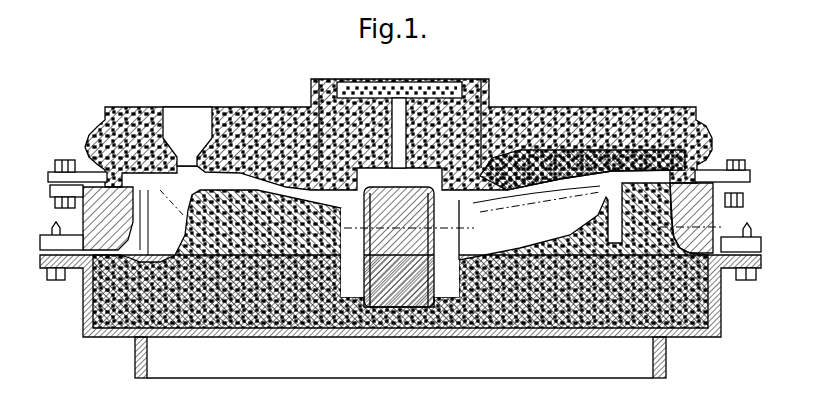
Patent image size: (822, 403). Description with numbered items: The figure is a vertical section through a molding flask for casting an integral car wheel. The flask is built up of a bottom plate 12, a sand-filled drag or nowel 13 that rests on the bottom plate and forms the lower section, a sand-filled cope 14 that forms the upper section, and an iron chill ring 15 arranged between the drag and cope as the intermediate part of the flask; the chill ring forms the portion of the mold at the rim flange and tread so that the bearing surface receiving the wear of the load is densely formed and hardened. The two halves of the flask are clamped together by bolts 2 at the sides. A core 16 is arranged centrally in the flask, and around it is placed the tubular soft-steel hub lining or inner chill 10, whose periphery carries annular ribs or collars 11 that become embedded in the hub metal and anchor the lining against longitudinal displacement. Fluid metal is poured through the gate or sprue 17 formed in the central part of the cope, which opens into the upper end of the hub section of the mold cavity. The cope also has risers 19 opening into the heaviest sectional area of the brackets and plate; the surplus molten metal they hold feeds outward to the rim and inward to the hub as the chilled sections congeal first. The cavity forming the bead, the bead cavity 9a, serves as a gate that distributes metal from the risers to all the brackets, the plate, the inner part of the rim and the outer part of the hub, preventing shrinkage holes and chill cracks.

The bolts 2 is at (52, 229).
The bead cavity 9a is at (616, 165).
The inner chill, lining or tool piece 10 is at (355, 252).
The laterally projecting members 11 is at (450, 248).
The bottom plate 12 is at (231, 338).
The drag or nowel 13 is at (97, 313).
The cope 14 is at (136, 97).
The iron chill, chiller or chill ring 15 is at (707, 228).
The core 16 is at (380, 335).
The gate or sprue 17 is at (399, 113).
The risers 19 is at (187, 136).